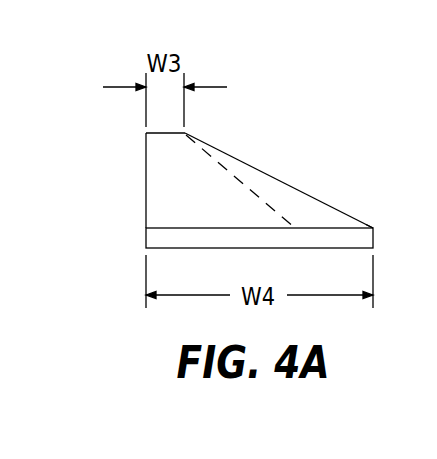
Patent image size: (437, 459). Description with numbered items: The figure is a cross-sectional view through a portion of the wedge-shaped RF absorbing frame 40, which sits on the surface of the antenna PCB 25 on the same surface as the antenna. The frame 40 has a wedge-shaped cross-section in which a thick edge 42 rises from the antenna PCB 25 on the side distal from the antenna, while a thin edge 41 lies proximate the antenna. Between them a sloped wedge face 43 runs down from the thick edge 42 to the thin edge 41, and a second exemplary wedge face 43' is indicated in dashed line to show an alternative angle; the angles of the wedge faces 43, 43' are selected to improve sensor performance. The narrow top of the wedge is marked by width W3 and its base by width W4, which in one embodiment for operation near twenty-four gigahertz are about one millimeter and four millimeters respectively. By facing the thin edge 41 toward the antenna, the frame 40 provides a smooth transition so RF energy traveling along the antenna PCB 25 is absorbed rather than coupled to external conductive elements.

The wedge-shaped RF absorbing frame 40 is at (130, 180).
The thin edge 41 is at (374, 229).
The thick edge 42 is at (146, 153).
The wedge face 43 is at (279, 177).
The wedge face 43' is at (277, 181).
The antenna PCB 25 is at (153, 238).